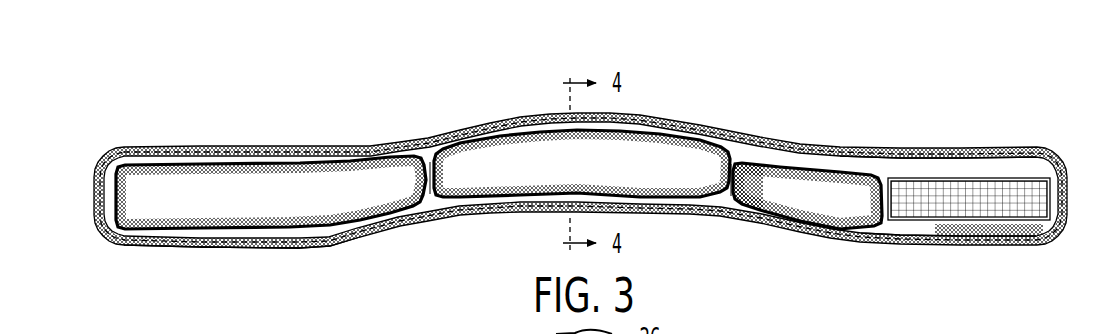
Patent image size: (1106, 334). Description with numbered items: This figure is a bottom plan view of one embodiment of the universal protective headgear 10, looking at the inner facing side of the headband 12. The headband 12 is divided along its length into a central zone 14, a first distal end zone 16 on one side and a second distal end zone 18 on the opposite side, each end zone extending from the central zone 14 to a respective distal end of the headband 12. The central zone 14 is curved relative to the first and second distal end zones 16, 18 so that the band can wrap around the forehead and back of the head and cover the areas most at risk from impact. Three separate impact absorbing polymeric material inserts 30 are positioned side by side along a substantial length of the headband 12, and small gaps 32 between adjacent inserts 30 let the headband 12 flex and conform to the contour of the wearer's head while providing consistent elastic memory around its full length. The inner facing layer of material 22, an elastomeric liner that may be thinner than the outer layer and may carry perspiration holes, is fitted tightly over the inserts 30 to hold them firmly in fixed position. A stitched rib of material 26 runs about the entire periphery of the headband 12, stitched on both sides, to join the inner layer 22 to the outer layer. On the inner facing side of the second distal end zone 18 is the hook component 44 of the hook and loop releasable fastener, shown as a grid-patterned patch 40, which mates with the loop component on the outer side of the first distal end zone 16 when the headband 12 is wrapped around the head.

The universal protective headgear 10 is at (358, 127).
The headband 12 is at (488, 214).
The central zone 14 is at (653, 130).
The first distal end zone 16 is at (200, 234).
The second distal end zone 18 is at (918, 167).
The inner facing layer of material 22 is at (895, 228).
The stitched rib of material 26 is at (300, 249).
The impact absorbing polymeric material inserts 30 is at (220, 188).
The gaps 32 is at (436, 214).
The fastener patch 40 is at (975, 174).
The hook component 44 is at (1015, 194).